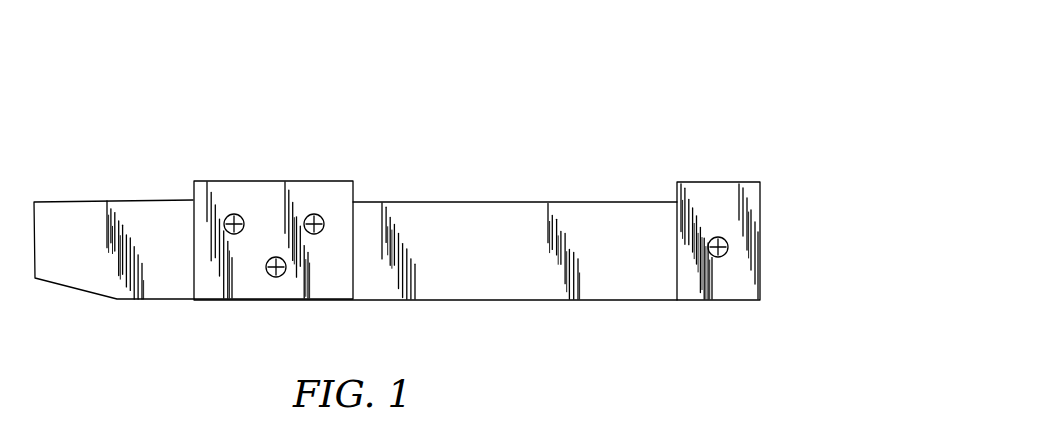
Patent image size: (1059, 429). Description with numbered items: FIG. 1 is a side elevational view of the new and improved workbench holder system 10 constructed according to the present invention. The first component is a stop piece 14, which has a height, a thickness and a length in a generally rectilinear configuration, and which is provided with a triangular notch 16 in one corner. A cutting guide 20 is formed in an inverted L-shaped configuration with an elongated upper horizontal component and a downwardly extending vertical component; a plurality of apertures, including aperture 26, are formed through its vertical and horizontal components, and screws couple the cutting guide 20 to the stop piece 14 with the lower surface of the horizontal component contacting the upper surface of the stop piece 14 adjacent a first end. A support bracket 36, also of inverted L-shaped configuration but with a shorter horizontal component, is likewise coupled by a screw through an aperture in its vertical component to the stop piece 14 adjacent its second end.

The workbench holder system 10 is at (475, 205).
The stop piece 14 is at (494, 202).
The triangular notch 16 is at (59, 284).
The cutting guide 20 is at (352, 180).
The aperture 26 is at (266, 272).
The support bracket 36 is at (677, 182).